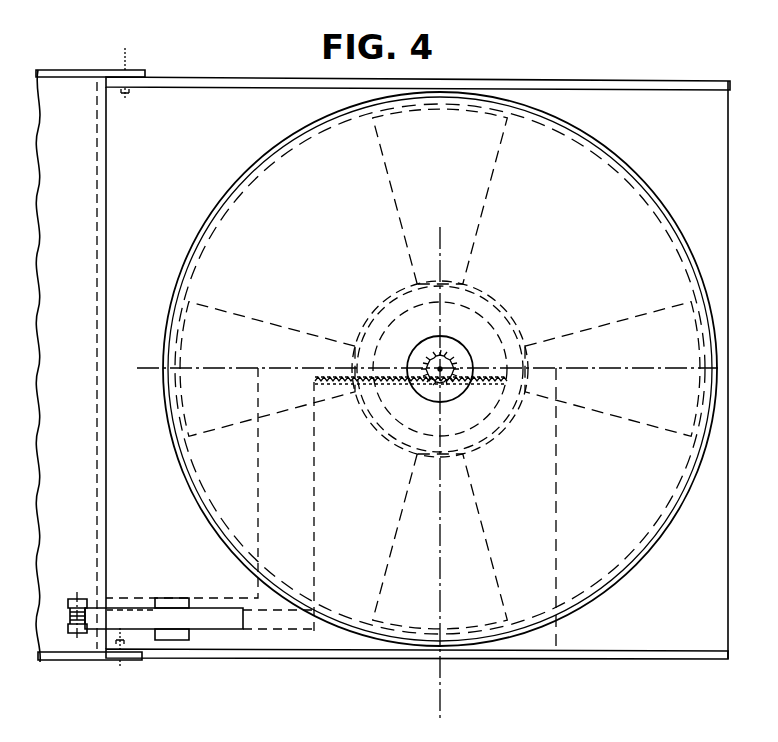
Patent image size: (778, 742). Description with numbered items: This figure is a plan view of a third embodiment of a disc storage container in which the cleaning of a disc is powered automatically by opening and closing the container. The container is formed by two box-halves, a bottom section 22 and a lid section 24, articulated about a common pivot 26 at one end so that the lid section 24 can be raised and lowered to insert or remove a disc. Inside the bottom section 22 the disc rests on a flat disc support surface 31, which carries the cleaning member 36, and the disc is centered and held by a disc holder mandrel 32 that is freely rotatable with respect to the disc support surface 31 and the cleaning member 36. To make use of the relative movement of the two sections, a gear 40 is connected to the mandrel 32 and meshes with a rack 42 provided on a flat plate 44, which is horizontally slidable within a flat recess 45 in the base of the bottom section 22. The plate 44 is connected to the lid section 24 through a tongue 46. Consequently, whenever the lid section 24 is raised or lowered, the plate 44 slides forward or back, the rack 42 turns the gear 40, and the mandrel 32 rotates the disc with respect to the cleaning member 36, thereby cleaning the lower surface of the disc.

The bottom section 22 is at (640, 80).
The lid section 24 is at (53, 84).
The common pivot 26 is at (123, 73).
The disc support surface 31 is at (582, 250).
The disc holder mandrel 32 is at (459, 345).
The cleaning member 36 is at (473, 180).
The gear 40 is at (432, 358).
The rack 42 is at (338, 366).
The flat plate 44 is at (346, 488).
The flat recess 45 is at (270, 486).
The tongue 46 is at (175, 625).